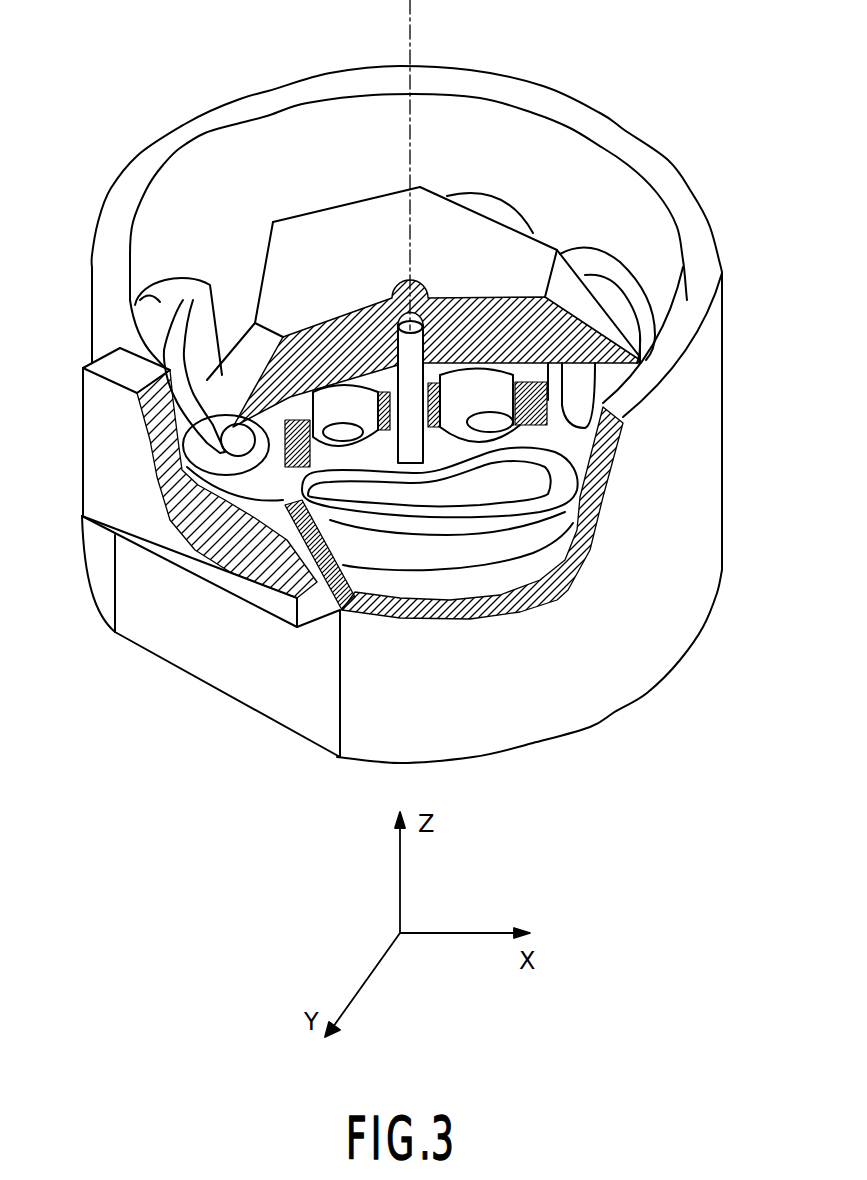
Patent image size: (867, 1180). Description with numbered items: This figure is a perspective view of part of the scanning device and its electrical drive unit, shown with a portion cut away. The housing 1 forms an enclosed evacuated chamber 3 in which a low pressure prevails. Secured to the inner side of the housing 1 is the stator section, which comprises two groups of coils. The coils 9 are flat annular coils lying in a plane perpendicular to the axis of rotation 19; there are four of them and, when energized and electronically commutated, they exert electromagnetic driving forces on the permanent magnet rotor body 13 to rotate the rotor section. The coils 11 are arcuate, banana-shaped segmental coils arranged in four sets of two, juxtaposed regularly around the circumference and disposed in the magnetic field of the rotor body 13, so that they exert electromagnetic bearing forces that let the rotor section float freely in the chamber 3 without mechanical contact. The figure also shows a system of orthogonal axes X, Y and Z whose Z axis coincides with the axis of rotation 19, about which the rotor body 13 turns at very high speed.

The housing 1 is at (693, 452).
The enclosed evacuated chamber 3 is at (592, 178).
The coils for generating electromagnetic driving forces 9 is at (195, 488).
The coils for generating electromagnetic bearing forces 11 is at (497, 210).
The permanent magnet rotor body 13 is at (525, 371).
The axis of rotation 19 is at (411, 32).